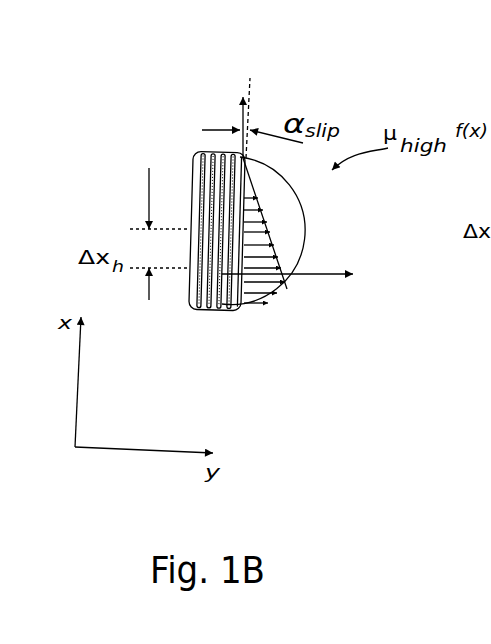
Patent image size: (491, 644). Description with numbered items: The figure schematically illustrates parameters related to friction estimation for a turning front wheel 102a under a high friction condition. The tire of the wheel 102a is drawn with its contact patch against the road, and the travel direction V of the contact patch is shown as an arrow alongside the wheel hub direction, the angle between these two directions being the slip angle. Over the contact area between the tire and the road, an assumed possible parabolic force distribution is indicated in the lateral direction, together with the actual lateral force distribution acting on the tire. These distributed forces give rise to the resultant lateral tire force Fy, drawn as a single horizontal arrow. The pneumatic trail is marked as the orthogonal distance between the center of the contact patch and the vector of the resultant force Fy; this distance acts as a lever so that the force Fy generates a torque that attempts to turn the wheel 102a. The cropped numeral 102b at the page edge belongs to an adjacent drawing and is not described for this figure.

The front wheel 102a is at (195, 191).
The second tire (cropped, adjacent figure) 102b is at (490, 184).
The resultant lateral tire force Fy is at (364, 231).
The travel direction V is at (245, 106).